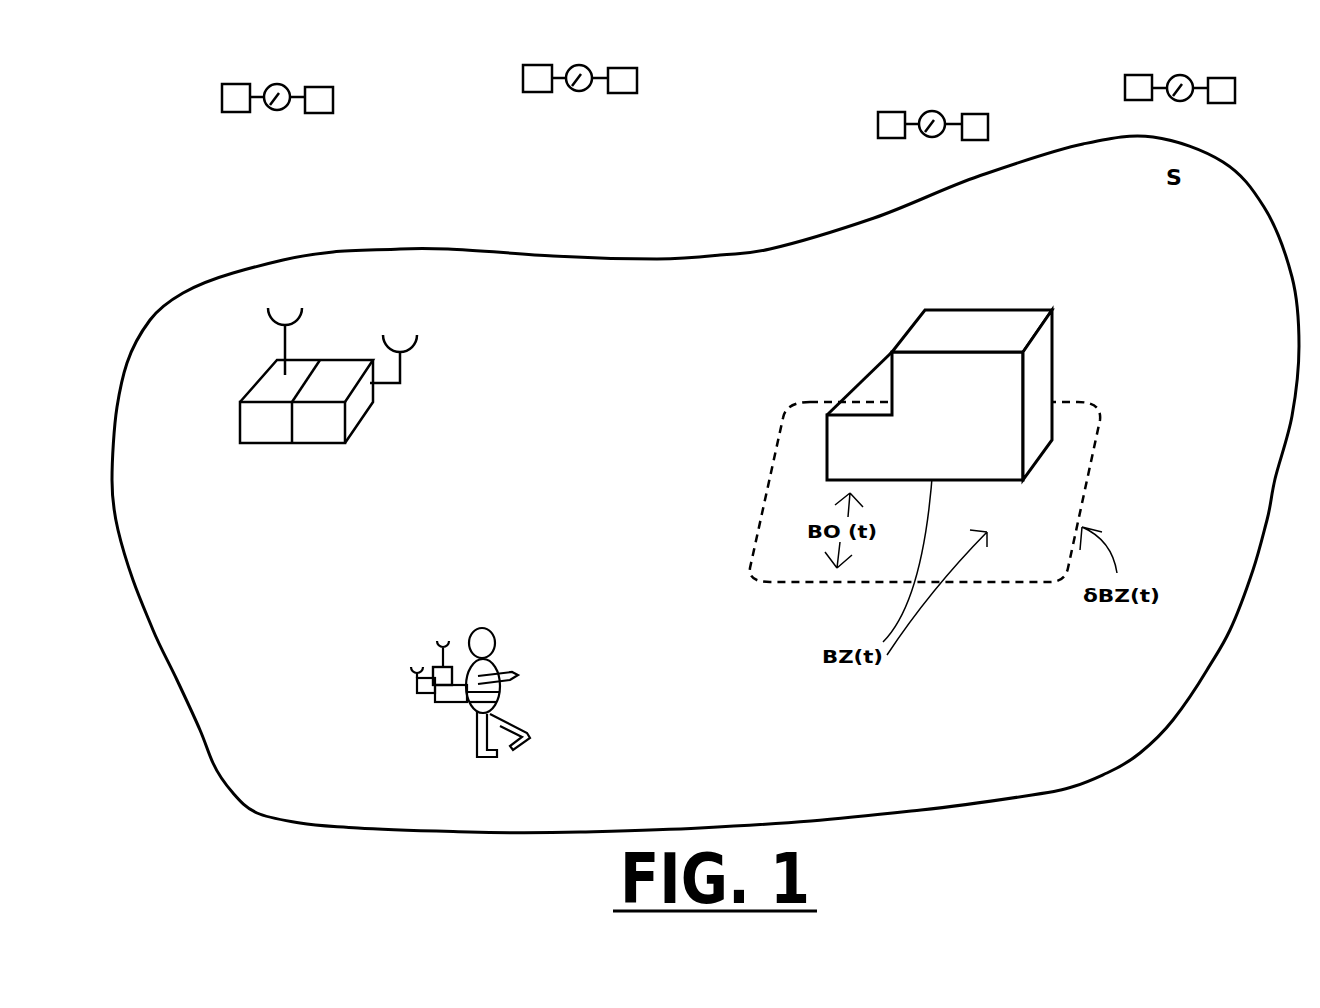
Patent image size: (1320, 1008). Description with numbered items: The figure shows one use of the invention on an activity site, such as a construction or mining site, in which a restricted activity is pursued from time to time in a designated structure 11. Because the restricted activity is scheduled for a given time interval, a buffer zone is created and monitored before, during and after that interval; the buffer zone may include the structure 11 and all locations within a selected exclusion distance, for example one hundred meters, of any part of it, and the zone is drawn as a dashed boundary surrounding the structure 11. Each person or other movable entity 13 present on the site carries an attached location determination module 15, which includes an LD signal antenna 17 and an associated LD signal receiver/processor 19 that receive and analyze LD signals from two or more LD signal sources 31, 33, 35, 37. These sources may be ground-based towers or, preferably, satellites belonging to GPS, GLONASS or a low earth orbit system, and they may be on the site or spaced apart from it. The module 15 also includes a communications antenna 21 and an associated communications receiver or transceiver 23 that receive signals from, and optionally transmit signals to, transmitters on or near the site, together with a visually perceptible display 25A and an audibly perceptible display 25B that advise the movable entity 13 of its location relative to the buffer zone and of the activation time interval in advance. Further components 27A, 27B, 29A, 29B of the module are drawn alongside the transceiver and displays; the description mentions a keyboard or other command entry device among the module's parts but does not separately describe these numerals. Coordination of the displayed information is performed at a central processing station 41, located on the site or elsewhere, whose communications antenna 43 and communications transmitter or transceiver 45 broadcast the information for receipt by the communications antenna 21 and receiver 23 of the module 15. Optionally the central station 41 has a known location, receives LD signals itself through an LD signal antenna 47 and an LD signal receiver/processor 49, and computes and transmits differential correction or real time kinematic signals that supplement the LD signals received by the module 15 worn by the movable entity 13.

The designated structure 11 is at (967, 322).
The movable entity 13 is at (445, 662).
The location determination (LD) module 15 is at (382, 662).
The LD signal antenna 17 is at (433, 655).
The LD signal receiver/processor 19 is at (433, 668).
The communications antenna 21 is at (417, 683).
The communications receiver (transceiver) 23 is at (379, 742).
The visually perceptible display 25A is at (379, 742).
The audibly perceptible display 25B is at (379, 742).
The portable unit module 27A is at (379, 742).
The portable unit module 27B is at (379, 742).
The portable unit module 29A is at (379, 742).
The portable unit module 29B is at (437, 700).
The LD signal source 31 is at (270, 107).
The LD signal source 33 is at (573, 88).
The LD signal source 35 is at (925, 133).
The LD signal source 37 is at (1172, 97).
The central processing station 41 is at (311, 364).
The communications antenna 43 is at (402, 370).
The communications transmitter (transceiver) 45 is at (304, 401).
The LD signal antenna 47 is at (280, 345).
The LD signal receiver/processor 49 is at (255, 432).